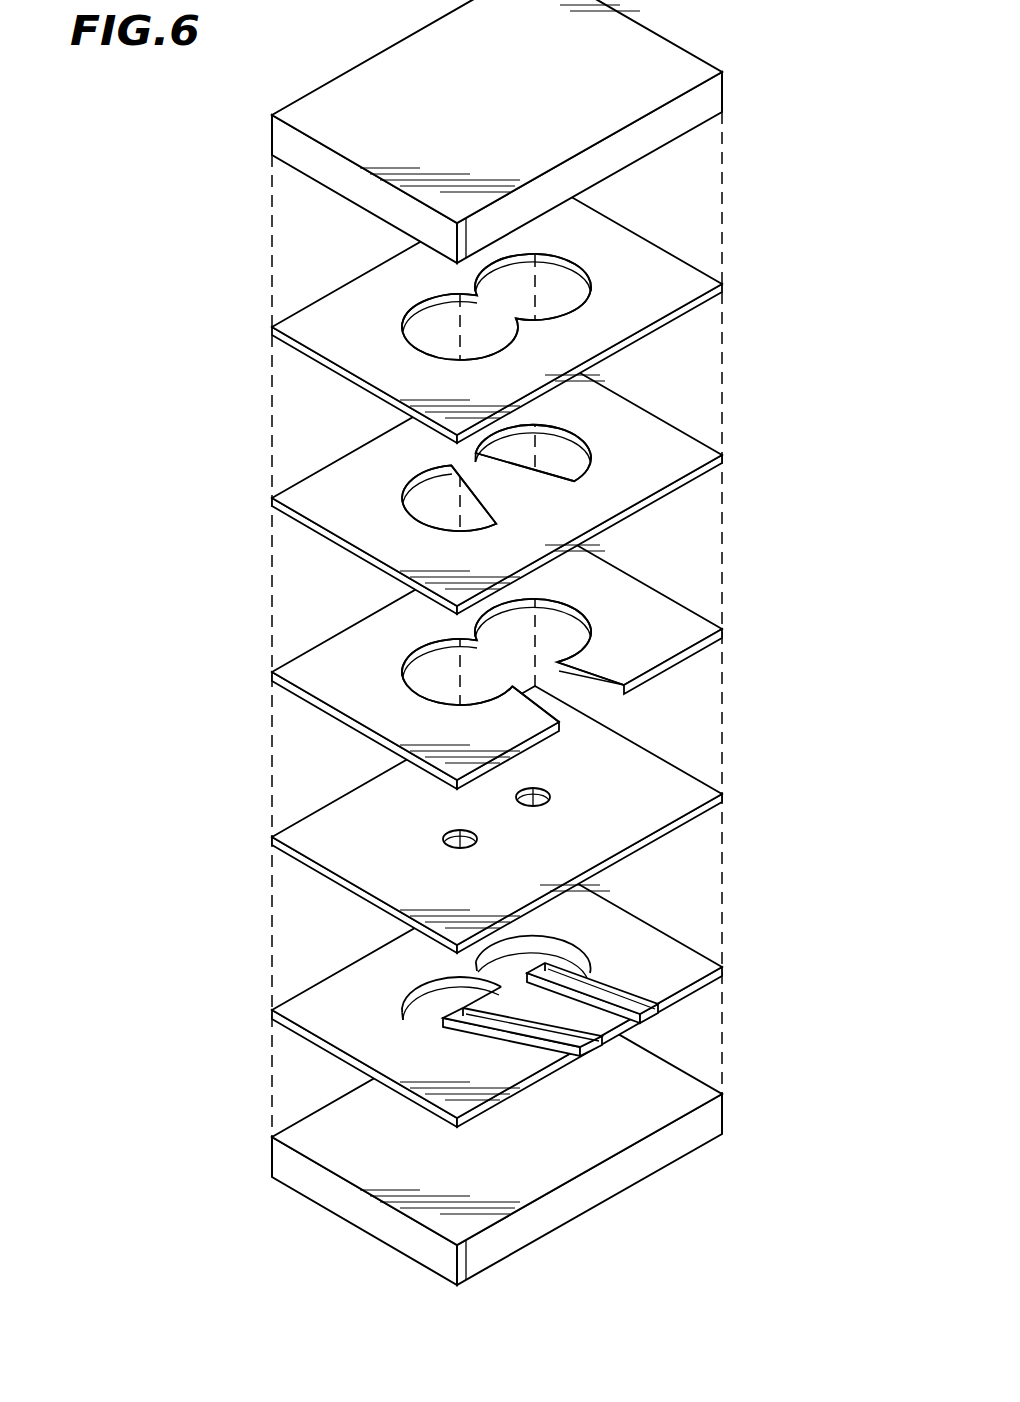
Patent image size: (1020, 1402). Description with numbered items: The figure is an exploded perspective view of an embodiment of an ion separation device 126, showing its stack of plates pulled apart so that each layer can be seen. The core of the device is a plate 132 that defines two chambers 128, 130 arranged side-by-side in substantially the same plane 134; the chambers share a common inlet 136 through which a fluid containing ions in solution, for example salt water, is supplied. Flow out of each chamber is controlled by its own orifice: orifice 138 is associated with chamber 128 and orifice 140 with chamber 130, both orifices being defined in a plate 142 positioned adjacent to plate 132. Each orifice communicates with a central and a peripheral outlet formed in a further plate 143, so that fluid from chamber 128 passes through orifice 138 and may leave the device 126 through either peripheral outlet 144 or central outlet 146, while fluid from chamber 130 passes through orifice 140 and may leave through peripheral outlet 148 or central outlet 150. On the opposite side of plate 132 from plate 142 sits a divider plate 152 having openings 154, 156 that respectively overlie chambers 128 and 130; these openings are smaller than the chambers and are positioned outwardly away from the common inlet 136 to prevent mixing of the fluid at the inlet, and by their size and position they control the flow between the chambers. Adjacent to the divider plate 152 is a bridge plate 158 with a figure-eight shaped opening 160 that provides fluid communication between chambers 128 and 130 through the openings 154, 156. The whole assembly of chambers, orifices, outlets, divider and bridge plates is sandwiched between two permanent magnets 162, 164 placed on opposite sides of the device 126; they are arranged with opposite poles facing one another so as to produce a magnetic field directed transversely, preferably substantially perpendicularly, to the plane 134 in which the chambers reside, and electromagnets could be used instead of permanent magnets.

The ion separation device 126 is at (772, 200).
The chamber 128 is at (423, 667).
The chamber 130 is at (562, 632).
The plate 132 is at (508, 655).
The plane 134 is at (695, 632).
The common inlet 136 is at (595, 698).
The orifice 138 is at (440, 838).
The orifice 140 is at (545, 797).
The plate 142 is at (539, 819).
The plate 143 is at (463, 998).
The peripheral outlet 144 is at (470, 1045).
The central outlet 146 is at (530, 1040).
The peripheral outlet 148 is at (603, 973).
The central outlet 150 is at (587, 1002).
The divider plate 152 is at (539, 480).
The opening 154 is at (423, 498).
The opening 156 is at (563, 460).
The bridge plate 158 is at (536, 309).
The figure-eight shaped opening 160 is at (553, 270).
The permanent magnet 162 is at (680, 1148).
The permanent magnet 164 is at (712, 46).